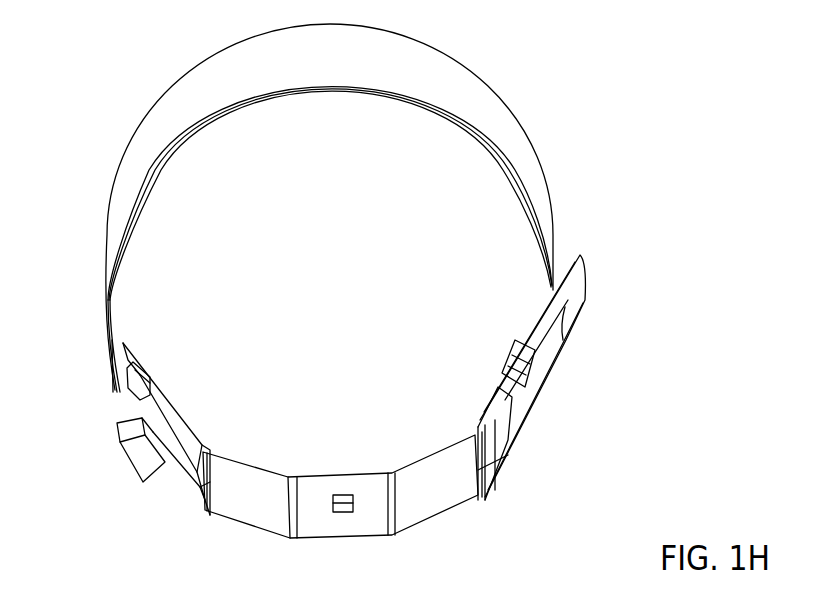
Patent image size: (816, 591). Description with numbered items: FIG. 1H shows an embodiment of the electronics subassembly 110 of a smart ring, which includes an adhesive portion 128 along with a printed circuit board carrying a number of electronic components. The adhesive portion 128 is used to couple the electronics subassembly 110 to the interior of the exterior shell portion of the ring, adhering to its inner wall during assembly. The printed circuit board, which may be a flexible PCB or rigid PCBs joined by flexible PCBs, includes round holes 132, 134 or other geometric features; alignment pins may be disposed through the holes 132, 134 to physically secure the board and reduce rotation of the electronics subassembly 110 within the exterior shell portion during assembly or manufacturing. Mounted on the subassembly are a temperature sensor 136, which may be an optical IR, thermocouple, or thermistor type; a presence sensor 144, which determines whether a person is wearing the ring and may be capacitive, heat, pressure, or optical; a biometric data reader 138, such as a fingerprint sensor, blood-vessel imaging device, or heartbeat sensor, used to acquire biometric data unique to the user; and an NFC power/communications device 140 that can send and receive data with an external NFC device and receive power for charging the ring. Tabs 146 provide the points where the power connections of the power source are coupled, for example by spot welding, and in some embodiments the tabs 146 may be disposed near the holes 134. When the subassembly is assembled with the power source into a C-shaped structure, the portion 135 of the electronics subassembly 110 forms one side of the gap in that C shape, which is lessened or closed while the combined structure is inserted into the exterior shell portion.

The electronics subassembly 110 is at (157, 70).
The adhesive portion 128 is at (420, 73).
The portion 135 is at (108, 352).
The biometric data reader 138 is at (185, 410).
The hole 134 is at (127, 393).
The NFC power/communications device 140 is at (130, 472).
The presence sensor 144 is at (357, 462).
The tab 146 is at (578, 325).
The hole 132 is at (547, 372).
The temperature sensor 136 is at (485, 382).